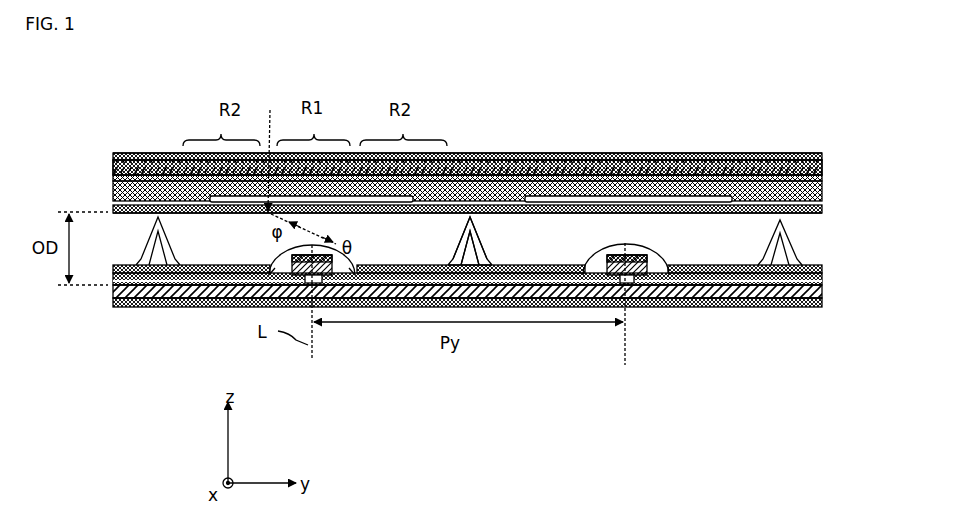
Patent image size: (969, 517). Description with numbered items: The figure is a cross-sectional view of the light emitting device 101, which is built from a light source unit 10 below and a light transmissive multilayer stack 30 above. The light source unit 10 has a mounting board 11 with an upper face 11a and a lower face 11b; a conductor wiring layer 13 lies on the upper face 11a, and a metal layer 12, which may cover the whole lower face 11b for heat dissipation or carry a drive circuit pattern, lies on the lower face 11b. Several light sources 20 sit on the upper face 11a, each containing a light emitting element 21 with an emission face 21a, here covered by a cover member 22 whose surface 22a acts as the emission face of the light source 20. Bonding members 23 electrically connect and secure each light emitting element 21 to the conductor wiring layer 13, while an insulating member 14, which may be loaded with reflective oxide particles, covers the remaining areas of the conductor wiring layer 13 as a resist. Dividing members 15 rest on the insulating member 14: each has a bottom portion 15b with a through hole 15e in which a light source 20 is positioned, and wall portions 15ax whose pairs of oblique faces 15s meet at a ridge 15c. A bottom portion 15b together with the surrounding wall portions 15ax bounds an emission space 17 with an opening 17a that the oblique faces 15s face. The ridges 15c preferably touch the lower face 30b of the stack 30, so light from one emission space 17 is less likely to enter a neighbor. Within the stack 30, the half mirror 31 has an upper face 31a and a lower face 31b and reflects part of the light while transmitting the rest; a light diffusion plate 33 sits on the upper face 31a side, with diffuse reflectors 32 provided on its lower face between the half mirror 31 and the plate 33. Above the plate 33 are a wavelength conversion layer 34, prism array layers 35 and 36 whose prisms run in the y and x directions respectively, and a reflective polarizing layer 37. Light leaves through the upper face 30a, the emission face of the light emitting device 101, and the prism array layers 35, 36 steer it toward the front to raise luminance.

The light emitting device 101 is at (788, 339).
The light source unit 10 is at (481, 299).
The mounting board 11 is at (822, 292).
The upper face 11a is at (786, 281).
The lower face 11b is at (776, 301).
The metal layer 12 is at (822, 302).
The conductor wiring layer 13 is at (822, 278).
The insulating member 14 is at (822, 266).
The dividing member 15 is at (469, 265).
The wall portion 15ax is at (473, 272).
The bottom portion 15b is at (413, 298).
The ridge 15c is at (451, 262).
The oblique face 15s is at (489, 250).
The through hole 15e is at (583, 270).
The emission space 17 is at (467, 233).
The opening 17a is at (268, 150).
The light source 20 is at (469, 260).
The light emitting element 21 is at (626, 285).
The emission face 21a is at (608, 251).
The cover member 22 is at (608, 279).
The surface 22a is at (586, 252).
The bonding member 23 is at (648, 280).
The light transmissive multilayer stack 30 is at (487, 240).
The upper face 30a is at (777, 151).
The lower face 30b is at (749, 221).
The half mirror 31 is at (822, 209).
The upper face 31a is at (655, 198).
The lower face 31b is at (688, 305).
The diffuse reflector 32 is at (726, 151).
The light diffusion plate 33 is at (822, 191).
The wavelength conversion layer 34 is at (822, 177).
The prism array layer 35 is at (822, 167).
The prism array layer 36 is at (822, 161).
The reflective polarizing layer 37 is at (822, 153).